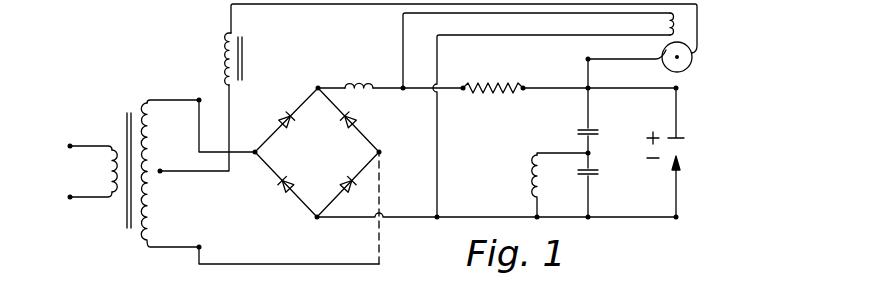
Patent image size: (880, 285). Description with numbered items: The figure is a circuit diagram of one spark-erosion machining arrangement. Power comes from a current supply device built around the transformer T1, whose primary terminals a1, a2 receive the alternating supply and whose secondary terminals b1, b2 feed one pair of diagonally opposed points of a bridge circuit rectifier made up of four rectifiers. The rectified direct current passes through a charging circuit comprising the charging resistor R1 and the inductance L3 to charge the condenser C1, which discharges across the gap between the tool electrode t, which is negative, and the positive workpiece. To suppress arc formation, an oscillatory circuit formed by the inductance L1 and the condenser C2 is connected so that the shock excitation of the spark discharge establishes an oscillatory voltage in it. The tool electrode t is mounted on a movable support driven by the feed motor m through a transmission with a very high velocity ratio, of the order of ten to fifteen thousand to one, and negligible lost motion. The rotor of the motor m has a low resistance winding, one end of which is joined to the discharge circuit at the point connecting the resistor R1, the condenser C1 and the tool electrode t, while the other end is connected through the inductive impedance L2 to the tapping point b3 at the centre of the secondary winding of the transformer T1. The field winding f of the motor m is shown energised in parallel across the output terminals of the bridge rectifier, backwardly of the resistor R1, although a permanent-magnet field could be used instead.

The transformer T1 is at (122, 158).
The primary terminal a1 is at (88, 158).
The primary terminal a2 is at (86, 209).
The secondary terminal b1 is at (180, 133).
The secondary terminal b2 is at (180, 223).
The tapping point b3 is at (160, 167).
The inductive impedance L2 is at (245, 59).
The inductance L3 is at (359, 75).
The charging resistor R1 is at (493, 77).
The condenser C1 is at (595, 124).
The condenser C2 is at (595, 182).
The inductance L1 is at (546, 185).
The field winding f is at (685, 25).
The feed motor m is at (688, 70).
The tool electrode t is at (669, 186).